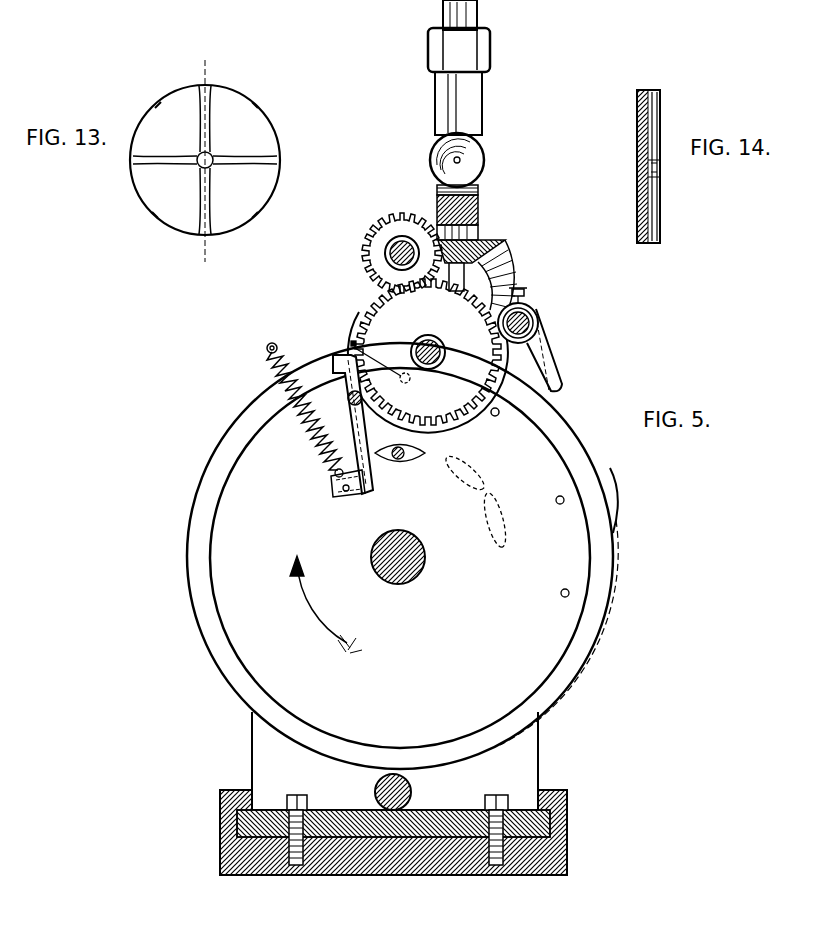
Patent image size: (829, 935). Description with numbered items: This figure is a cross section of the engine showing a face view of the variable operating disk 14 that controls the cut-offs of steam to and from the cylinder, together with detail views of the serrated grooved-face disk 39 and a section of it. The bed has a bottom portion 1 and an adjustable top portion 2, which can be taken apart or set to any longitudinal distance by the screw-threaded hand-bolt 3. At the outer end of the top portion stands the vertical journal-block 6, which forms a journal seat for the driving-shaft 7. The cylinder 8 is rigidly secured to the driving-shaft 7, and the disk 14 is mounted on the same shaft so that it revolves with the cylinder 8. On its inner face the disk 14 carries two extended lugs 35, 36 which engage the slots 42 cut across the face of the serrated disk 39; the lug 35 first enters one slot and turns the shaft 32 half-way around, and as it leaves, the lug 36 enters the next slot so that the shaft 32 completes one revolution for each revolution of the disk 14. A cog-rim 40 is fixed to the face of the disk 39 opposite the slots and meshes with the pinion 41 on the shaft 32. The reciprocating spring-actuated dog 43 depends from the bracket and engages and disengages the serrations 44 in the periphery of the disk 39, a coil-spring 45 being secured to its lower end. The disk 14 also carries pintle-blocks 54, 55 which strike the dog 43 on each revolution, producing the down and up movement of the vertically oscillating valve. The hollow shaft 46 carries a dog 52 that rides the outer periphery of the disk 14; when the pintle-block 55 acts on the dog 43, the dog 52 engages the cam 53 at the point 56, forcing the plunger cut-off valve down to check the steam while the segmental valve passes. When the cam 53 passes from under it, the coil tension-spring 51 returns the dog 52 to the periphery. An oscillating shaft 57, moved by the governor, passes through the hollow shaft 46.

In FIG. 5, the bottom bed portion 1 is at (360, 855).
In FIG. 5, the top bed portion 2 is at (432, 822).
In FIG. 5, the screw-threaded hand-bolt 3 is at (375, 791).
In FIG. 5, the vertical journal-block 6 is at (538, 762).
In FIG. 5, the driving-shaft 7 is at (412, 566).
In FIG. 5, the cylinder 8 is at (297, 800).
In FIG. 5, the disk 14 is at (262, 519).
In FIG. 5, the shaft 32 is at (392, 252).
In FIG. 5, the extended lug 35 is at (500, 411).
In FIG. 5, the extended lug 36 is at (353, 343).
In FIG. 13, the serrated grooved-face disk 39 is at (243, 143).
In FIG. 5, the serrated grooved-face disk 39 is at (365, 313).
In FIG. 5, the cog-rim 40 is at (396, 312).
In FIG. 5, the pinion 41 is at (386, 238).
In FIG. 13, the slots 42 is at (211, 90).
In FIG. 14, the slots 42 is at (652, 202).
In FIG. 5, the reciprocating spring-actuated dog 43 is at (372, 472).
In FIG. 13, the serrations 44 is at (158, 104).
In FIG. 5, the coil-spring 45 is at (278, 368).
In FIG. 5, the hollow shaft 46 is at (519, 320).
In FIG. 5, the coil tension-spring 51 is at (420, 366).
In FIG. 5, the dog 52 is at (548, 366).
In FIG. 5, the cam 53 is at (612, 495).
In FIG. 5, the pintle-block 54 is at (332, 480).
In FIG. 5, the pintle-block 55 is at (416, 449).
In FIG. 5, the cam engagement point 56 is at (615, 533).
In FIG. 5, the oscillating shaft 57 is at (531, 318).